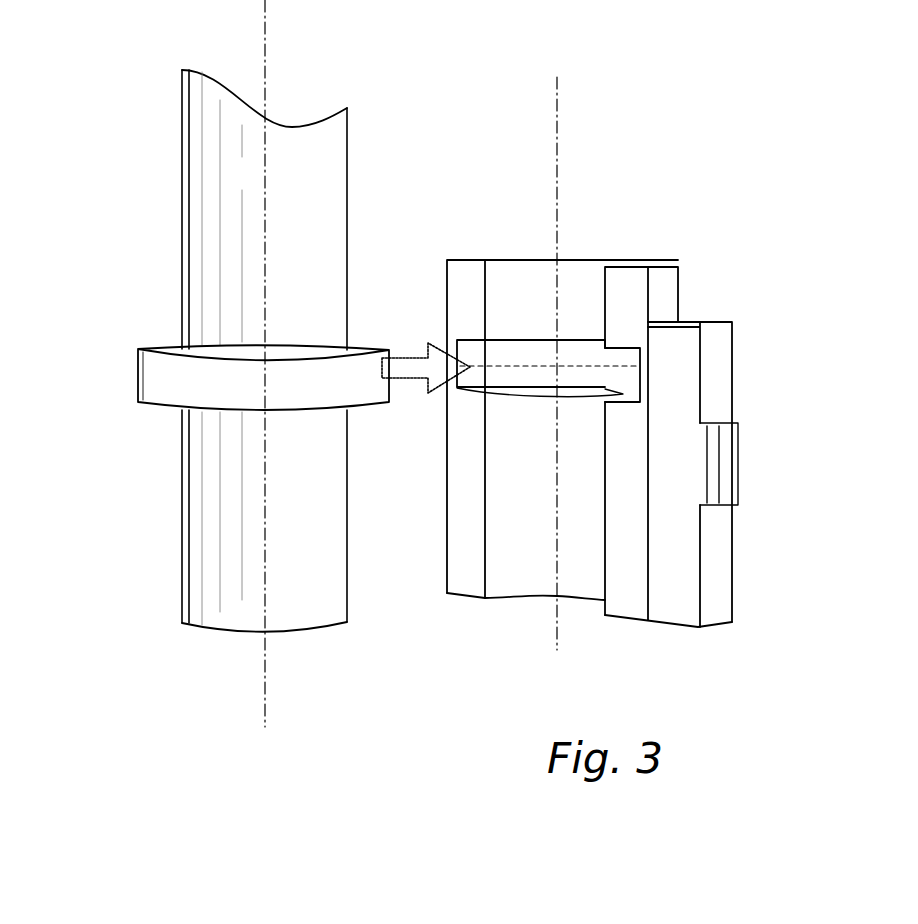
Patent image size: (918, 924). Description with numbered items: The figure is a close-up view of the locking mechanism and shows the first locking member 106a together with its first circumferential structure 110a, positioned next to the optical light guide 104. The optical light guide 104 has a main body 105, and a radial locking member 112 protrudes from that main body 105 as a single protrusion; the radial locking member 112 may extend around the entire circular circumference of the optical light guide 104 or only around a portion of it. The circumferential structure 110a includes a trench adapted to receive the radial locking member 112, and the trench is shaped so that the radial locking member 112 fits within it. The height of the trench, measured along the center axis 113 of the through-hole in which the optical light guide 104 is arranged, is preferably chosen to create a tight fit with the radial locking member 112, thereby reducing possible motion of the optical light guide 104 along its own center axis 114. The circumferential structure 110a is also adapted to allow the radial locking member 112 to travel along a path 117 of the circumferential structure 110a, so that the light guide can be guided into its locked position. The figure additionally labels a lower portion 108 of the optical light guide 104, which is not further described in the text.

The optical light guide 104 is at (140, 275).
The main body 105 is at (212, 118).
The tube end portion 108 is at (182, 598).
The radial locking member 112 is at (170, 376).
The center axis 114 is at (266, 62).
The first locking member 106a is at (562, 248).
The circumferential structure 110a is at (562, 360).
The center axis of the through-hole 113 is at (557, 128).
The path 117 is at (580, 363).